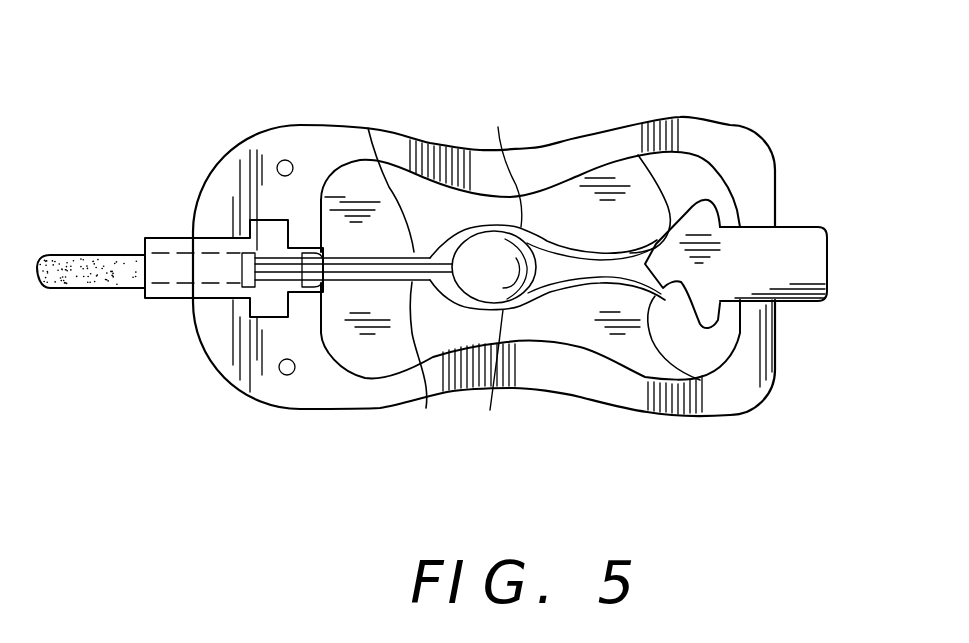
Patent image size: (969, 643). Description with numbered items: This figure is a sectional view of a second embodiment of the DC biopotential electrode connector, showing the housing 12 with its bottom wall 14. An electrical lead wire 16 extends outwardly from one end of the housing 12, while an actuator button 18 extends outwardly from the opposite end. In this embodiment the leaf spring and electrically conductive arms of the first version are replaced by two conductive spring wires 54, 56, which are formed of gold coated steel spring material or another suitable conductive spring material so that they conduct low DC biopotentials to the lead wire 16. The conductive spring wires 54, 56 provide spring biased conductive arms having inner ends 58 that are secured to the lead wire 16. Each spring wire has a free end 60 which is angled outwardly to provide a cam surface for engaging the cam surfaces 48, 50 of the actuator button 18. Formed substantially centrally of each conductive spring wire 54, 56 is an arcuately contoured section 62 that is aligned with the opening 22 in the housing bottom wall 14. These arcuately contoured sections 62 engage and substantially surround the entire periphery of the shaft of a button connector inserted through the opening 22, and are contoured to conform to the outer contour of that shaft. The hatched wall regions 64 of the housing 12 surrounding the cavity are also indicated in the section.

The housing 12 is at (542, 158).
The bottom wall 14 is at (570, 330).
The electrical lead wire 16 is at (90, 256).
The actuator button 18 is at (806, 247).
The opening 22 is at (483, 252).
The cam surface 48 is at (688, 205).
The cam surface 50 is at (695, 322).
The conductive spring wire 54 is at (368, 128).
The conductive spring wire 56 is at (426, 408).
The inner end 58 is at (350, 380).
The free end 60 is at (638, 155).
The arcuately contoured section 62 is at (490, 410).
The housing wall web 64 is at (498, 127).